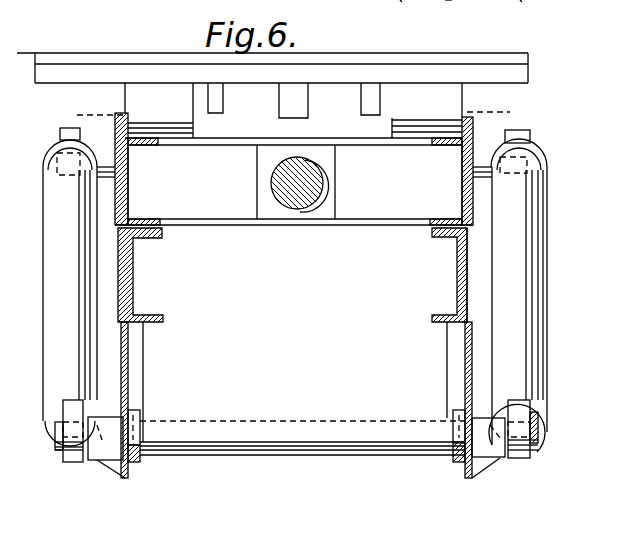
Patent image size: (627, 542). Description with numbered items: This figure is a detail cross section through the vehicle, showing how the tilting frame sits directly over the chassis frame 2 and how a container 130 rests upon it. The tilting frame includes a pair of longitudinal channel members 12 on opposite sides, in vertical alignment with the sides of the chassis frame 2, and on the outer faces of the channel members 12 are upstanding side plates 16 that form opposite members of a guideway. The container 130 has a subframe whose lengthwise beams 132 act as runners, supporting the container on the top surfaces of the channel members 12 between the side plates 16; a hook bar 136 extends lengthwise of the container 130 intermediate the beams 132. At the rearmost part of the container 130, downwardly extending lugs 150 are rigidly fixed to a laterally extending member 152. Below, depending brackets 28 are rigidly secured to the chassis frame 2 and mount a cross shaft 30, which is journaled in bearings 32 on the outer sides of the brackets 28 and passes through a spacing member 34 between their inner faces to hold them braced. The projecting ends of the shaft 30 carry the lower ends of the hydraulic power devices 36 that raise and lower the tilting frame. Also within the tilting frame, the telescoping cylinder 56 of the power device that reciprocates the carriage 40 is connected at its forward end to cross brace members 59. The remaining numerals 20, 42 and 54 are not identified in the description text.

The chassis frame 2 is at (133, 284).
The longitudinal channel member 12 is at (129, 183).
The upstanding side plate 16 is at (121, 204).
The channel wall 20 is at (462, 286).
The depending bracket 28 is at (128, 363).
The cross shaft 30 is at (538, 443).
The bearing 32 is at (107, 450).
The spacing member 34 is at (357, 445).
The hydraulic power device 36 is at (55, 303).
The carriage 40 is at (450, 0).
The support 42 is at (524, 10).
The arm 54 is at (390, 7).
The telescoping cylinder 56 is at (300, 200).
The cross brace member 59 is at (243, 212).
The container 130 is at (528, 62).
The beam 132 is at (133, 103).
The hook bar 136 is at (298, 91).
The downwardly extending lug 150 is at (215, 91).
The laterally extending member 152 is at (485, 51).